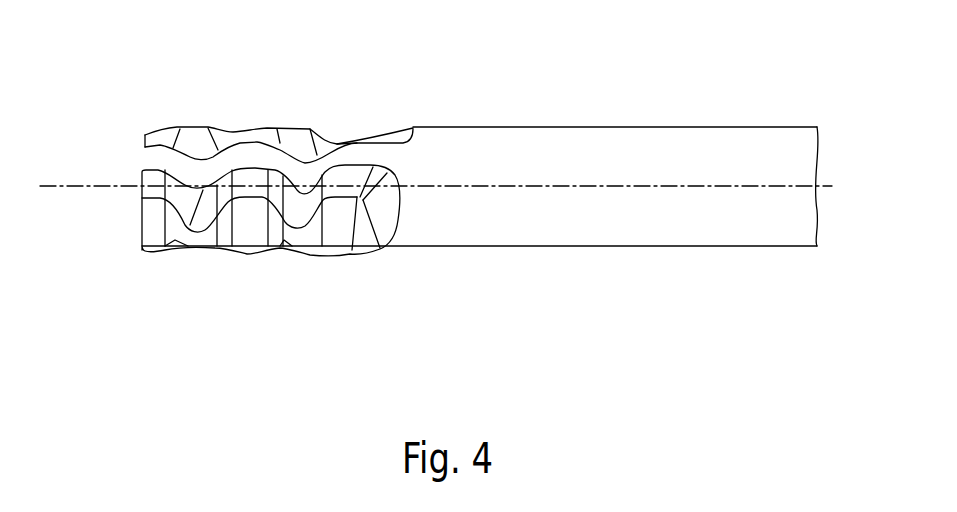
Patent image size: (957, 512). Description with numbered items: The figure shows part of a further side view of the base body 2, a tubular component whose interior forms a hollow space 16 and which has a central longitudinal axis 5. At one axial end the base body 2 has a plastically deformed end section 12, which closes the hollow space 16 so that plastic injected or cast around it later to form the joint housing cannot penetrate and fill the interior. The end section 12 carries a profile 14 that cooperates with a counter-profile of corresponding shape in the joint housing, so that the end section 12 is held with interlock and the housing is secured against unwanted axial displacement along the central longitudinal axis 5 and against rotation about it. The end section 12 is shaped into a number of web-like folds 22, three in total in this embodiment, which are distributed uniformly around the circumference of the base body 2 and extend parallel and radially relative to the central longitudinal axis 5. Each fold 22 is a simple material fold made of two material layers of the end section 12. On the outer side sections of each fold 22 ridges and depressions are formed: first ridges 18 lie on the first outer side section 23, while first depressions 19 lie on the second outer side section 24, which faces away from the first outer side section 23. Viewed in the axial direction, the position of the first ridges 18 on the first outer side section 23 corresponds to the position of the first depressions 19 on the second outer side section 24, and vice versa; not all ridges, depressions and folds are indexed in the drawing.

The base body 2 is at (770, 157).
The central longitudinal axis 5 is at (652, 184).
The end section 12 is at (274, 282).
The profile 14 is at (303, 262).
The hollow space 16 is at (832, 210).
The first ridges 18 is at (246, 147).
The first depressions 19 is at (193, 160).
The web-like folds 22 is at (153, 157).
The first outer side section 23 is at (335, 143).
The second outer side section 24 is at (337, 182).